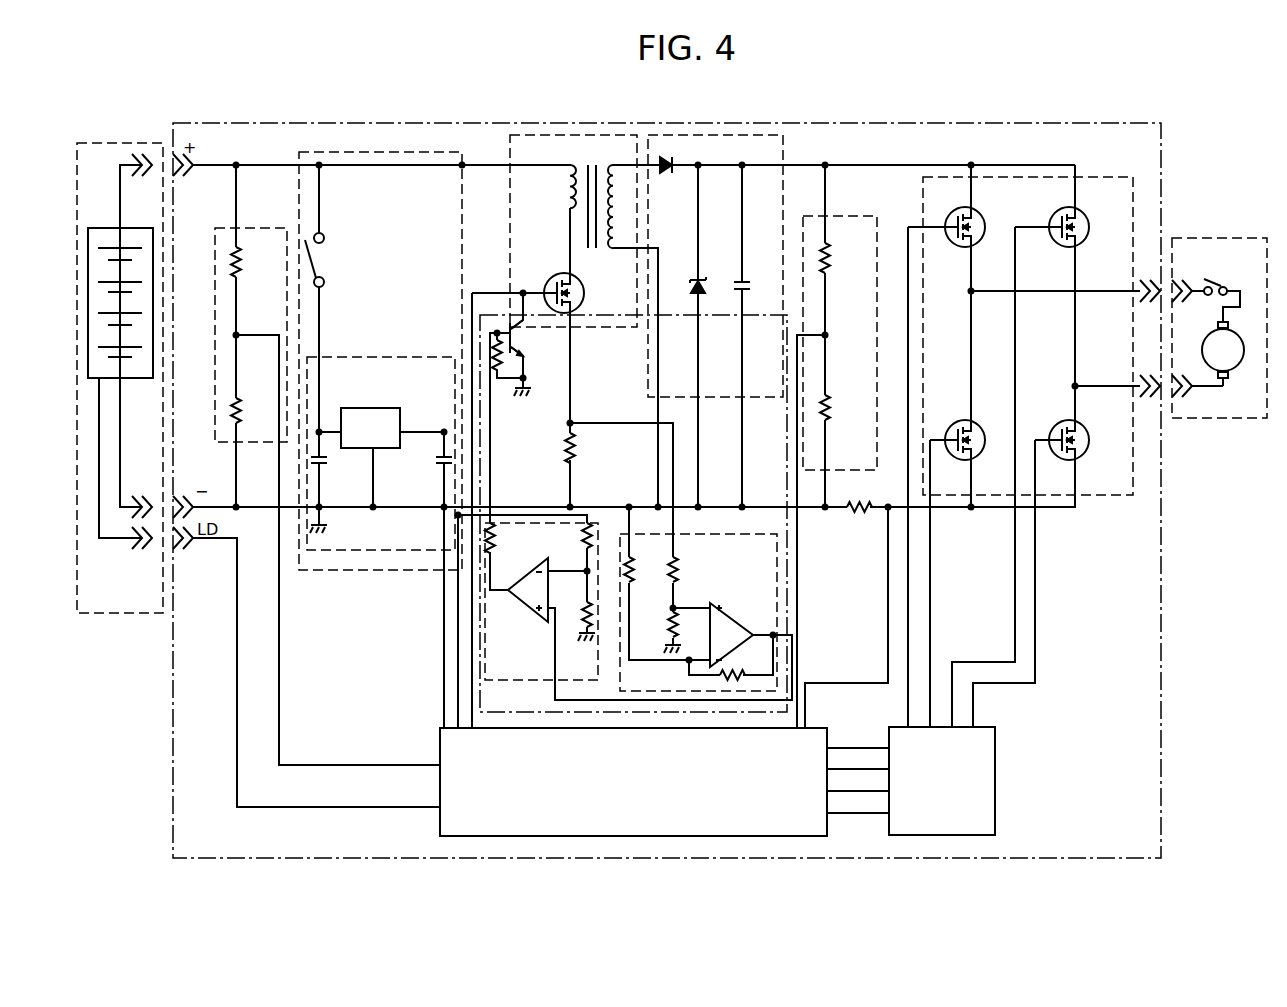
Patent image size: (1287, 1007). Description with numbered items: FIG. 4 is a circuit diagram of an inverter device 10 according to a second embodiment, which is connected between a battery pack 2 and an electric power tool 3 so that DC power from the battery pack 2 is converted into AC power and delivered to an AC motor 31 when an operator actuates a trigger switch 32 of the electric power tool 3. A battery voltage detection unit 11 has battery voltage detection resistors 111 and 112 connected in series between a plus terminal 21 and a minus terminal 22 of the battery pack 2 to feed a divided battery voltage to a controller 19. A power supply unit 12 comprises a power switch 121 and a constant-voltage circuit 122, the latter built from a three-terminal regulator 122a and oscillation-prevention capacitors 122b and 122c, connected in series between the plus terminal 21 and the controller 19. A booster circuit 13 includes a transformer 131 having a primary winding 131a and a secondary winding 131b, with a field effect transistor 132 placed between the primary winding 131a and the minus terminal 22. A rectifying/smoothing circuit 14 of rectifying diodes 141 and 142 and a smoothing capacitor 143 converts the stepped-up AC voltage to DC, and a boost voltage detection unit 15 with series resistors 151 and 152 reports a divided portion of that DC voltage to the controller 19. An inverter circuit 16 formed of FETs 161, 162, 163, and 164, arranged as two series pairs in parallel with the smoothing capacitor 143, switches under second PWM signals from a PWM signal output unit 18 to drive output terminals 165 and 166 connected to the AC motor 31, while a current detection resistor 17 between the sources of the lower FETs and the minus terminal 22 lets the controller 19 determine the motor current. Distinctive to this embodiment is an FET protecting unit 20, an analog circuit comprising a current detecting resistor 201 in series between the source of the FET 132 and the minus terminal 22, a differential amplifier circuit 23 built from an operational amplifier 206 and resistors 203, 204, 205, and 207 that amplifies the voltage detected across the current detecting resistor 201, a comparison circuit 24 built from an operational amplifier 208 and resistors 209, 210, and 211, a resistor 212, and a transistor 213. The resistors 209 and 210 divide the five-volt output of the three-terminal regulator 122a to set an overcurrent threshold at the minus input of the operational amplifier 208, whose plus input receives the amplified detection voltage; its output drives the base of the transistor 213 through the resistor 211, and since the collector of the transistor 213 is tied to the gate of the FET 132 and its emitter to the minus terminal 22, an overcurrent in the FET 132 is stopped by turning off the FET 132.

The battery pack 2 is at (128, 149).
The plus terminal 21 is at (123, 180).
The minus terminal 22 is at (128, 498).
The electric power tool 3 is at (1224, 239).
The AC motor 31 is at (1232, 374).
The trigger switch 32 is at (1224, 284).
The inverter device 10 is at (1098, 120).
The battery voltage detection unit 11 is at (252, 231).
The battery voltage detection resistor 111 is at (249, 259).
The battery voltage detection resistor 112 is at (262, 402).
The power supply unit 12 is at (343, 157).
The power switch 121 is at (329, 263).
The constant-voltage circuit 122 is at (382, 359).
The three-terminal regulator 122a is at (349, 396).
The oscillation-prevention capacitor 122b is at (326, 464).
The oscillation-prevention capacitor 122c is at (437, 464).
The booster circuit 13 is at (582, 133).
The transformer 131 is at (594, 161).
The primary winding 131a is at (566, 211).
The secondary winding 131b is at (611, 257).
The field effect transistor 132 is at (577, 286).
The rectifying/smoothing circuit 14 is at (786, 144).
The rectifying diode 141 is at (671, 159).
The rectifying diode 142 is at (702, 285).
The smoothing capacitor 143 is at (751, 285).
The boost voltage detection unit 15 is at (852, 219).
The resistor 151 is at (835, 261).
The resistor 152 is at (835, 412).
The inverter circuit 16 is at (1092, 181).
The FET 161 is at (984, 225).
The FET 162 is at (980, 422).
The FET 163 is at (1088, 225).
The FET 164 is at (1088, 438).
The output terminal 165 is at (1138, 286).
The output terminal 166 is at (1138, 380).
The current detection resistor 17 is at (865, 501).
The PWM signal output unit 18 is at (997, 771).
The controller 19 is at (428, 729).
The FET protecting unit 20 is at (659, 313).
The current detecting resistor 201 is at (578, 443).
The resistor 203 is at (681, 581).
The resistor 204 is at (666, 620).
The resistor 205 is at (632, 575).
The operational amplifier 206 is at (734, 629).
The resistor 207 is at (734, 676).
The operational amplifier 208 is at (520, 619).
The resistor 209 is at (592, 546).
The resistor 210 is at (593, 611).
The resistor 211 is at (498, 535).
The resistor 212 is at (497, 392).
The transistor 213 is at (540, 366).
The differential amplifier circuit 23 is at (701, 538).
The comparison circuit 24 is at (524, 687).